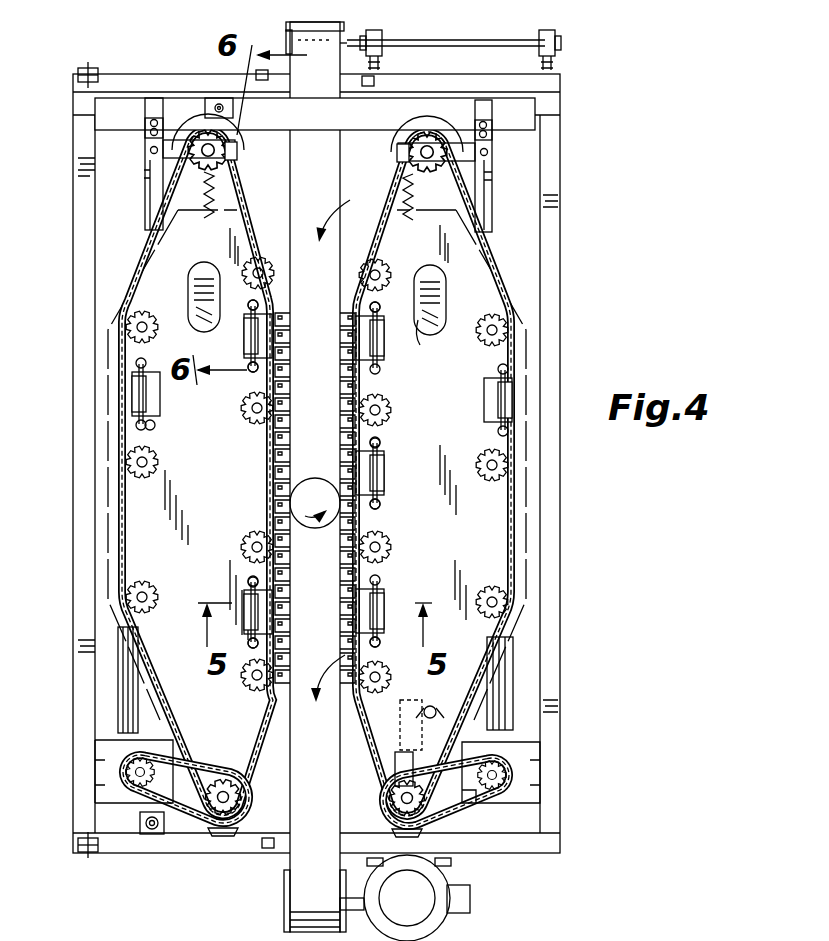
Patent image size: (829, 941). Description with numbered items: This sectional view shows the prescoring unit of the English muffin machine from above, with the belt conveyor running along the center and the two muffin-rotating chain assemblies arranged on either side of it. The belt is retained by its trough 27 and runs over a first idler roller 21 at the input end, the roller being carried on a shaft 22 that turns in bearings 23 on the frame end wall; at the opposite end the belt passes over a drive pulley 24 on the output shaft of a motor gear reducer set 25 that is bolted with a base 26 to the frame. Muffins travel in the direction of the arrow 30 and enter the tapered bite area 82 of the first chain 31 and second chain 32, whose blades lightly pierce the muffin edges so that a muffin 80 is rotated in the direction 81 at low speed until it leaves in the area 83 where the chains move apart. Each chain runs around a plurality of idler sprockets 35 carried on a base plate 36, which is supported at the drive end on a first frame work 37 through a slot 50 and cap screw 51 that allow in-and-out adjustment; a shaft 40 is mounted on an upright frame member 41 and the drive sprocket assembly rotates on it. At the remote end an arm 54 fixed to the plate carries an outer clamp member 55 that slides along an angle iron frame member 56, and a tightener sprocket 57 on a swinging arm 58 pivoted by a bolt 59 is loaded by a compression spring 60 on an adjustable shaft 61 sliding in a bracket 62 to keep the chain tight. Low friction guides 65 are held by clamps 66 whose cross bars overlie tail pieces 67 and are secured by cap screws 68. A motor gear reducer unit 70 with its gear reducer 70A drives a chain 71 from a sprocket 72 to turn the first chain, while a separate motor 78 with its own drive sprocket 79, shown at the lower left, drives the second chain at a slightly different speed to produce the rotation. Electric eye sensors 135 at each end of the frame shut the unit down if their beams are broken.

The first idler roller 21 is at (289, 36).
The shaft 22 is at (458, 40).
The bearings 23 is at (380, 32).
The drive pulley 24 is at (284, 912).
The motor gear reducer set 25 is at (440, 920).
The base 26 is at (432, 862).
The trough 27 is at (342, 134).
The arrow 30 is at (316, 390).
The first chain 31 is at (352, 412).
The second chain 32 is at (276, 447).
The idler sprockets 35 is at (388, 266).
The base plate 36 is at (458, 504).
The first frame work 37 is at (395, 768).
The shaft 40 is at (246, 798).
The upright frame member 41 is at (246, 836).
The slot 50 is at (436, 706).
The cap screw 51 is at (408, 714).
The arm 54 is at (146, 180).
The outer clamp member 55 is at (154, 98).
The angle iron frame member 56 is at (118, 95).
The tightener sprocket 57 is at (230, 150).
The swinging arm 58 is at (172, 140).
The bolt 59 is at (150, 150).
The compression spring 60 is at (414, 200).
The adjustable shaft 61 is at (447, 295).
The bracket 62 is at (431, 341).
The guides 65 is at (244, 340).
The clamps 66 is at (248, 306).
The tail pieces 67 is at (380, 444).
The cap screws 68 is at (250, 370).
The motor gear reducer unit 70 is at (513, 706).
The gear reducer 70A is at (520, 815).
The chain 71 is at (185, 830).
The sprocket 72 is at (512, 775).
The motor 78 is at (118, 688).
The drive sprocket 79 is at (140, 792).
The English muffin 80 is at (314, 488).
The rotation direction 81 is at (313, 527).
The bite area 82 is at (345, 208).
The exit area 83 is at (372, 658).
The electric eye sender-receiver sensors 135 is at (376, 76).